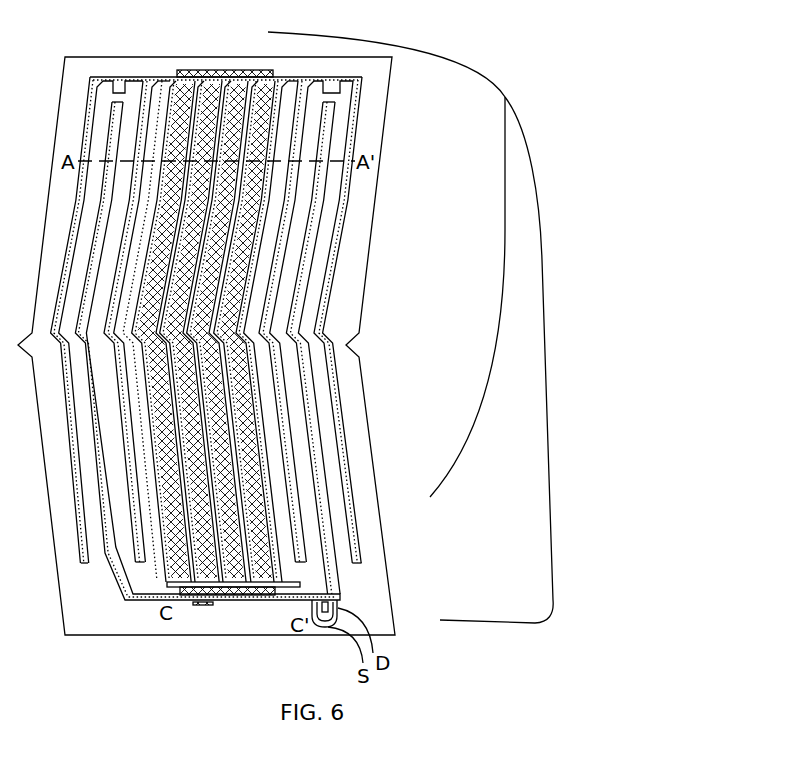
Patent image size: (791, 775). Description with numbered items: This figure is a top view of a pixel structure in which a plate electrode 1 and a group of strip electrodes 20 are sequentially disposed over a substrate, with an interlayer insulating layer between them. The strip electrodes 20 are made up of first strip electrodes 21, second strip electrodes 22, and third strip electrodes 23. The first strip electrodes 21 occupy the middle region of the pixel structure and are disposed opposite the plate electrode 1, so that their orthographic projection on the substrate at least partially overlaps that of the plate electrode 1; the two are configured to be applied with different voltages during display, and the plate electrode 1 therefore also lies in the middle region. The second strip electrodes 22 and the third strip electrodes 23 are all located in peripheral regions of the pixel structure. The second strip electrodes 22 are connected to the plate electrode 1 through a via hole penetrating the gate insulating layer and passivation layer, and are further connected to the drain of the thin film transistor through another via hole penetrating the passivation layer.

The plate electrode 1 is at (188, 548).
The strip electrodes 20 is at (505, 97).
The first strip electrode 21 is at (223, 102).
The second strip electrode 22 is at (337, 582).
The third strip electrode 23 is at (347, 483).